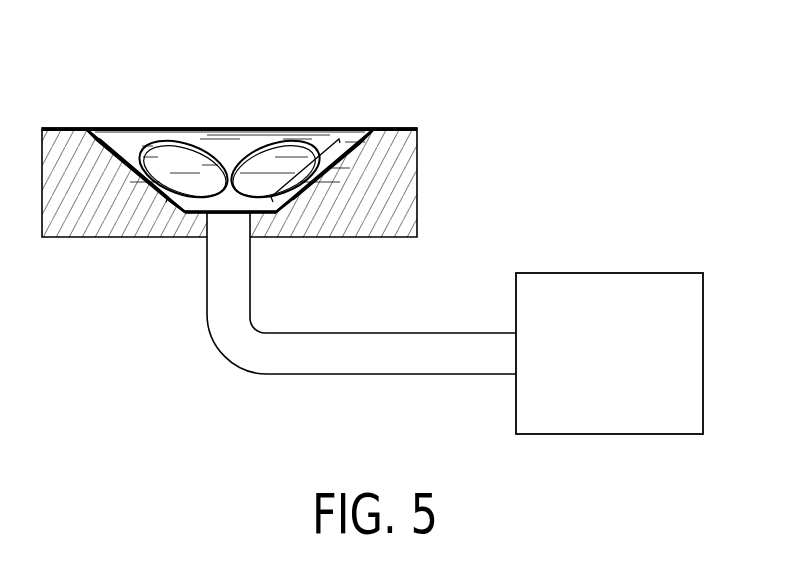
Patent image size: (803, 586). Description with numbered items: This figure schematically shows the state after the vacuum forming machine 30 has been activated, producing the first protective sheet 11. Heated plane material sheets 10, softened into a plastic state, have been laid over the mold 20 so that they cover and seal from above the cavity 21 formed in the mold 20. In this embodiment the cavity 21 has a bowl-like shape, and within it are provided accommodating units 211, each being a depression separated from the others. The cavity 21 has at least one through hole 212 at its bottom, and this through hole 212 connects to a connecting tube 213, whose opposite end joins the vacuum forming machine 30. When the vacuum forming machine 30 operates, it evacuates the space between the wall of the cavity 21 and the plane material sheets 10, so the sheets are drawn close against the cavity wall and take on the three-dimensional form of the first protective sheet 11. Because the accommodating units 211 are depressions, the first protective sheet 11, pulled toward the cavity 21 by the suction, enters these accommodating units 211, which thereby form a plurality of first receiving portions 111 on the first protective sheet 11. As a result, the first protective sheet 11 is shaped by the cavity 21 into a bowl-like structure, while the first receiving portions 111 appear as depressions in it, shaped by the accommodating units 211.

The plane material sheets 10 is at (60, 116).
The first protective sheet 11 is at (93, 135).
The first receiving portions 111 is at (130, 165).
The mold 20 is at (431, 177).
The cavity 21 is at (363, 129).
The accommodating units 211 is at (311, 198).
The through hole 212 is at (207, 226).
The connecting tube 213 is at (223, 297).
The vacuum forming machine 30 is at (499, 406).